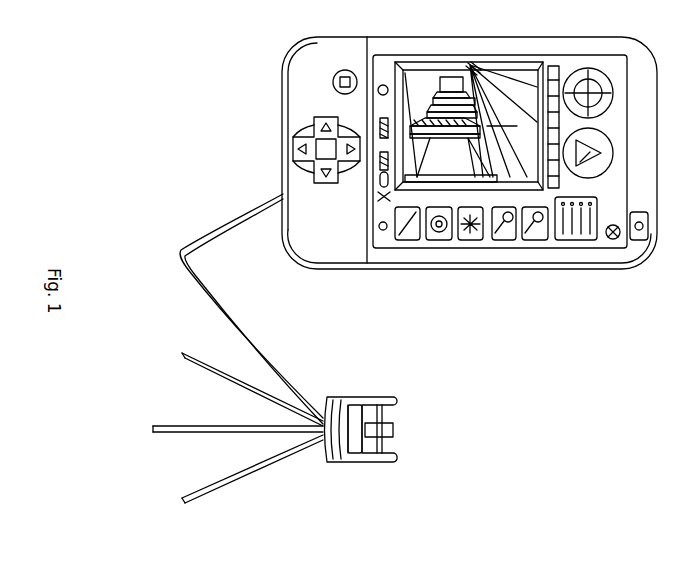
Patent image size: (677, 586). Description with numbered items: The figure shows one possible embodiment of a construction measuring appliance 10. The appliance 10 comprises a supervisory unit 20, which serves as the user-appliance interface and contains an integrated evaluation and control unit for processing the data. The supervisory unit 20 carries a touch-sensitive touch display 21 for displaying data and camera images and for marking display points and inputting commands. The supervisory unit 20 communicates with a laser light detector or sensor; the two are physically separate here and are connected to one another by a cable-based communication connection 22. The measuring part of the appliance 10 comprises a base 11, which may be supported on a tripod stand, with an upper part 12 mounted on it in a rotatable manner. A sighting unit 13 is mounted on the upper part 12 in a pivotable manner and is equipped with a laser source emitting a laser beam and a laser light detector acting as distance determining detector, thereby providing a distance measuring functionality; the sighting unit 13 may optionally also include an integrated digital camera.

The construction measuring appliance 10 is at (568, 497).
The base 11 is at (323, 465).
The upper part 12 is at (362, 403).
The sighting unit 13 is at (393, 428).
The supervisory unit 20 is at (588, 293).
The touch display 21 is at (413, 102).
The communication connection 22 is at (180, 250).